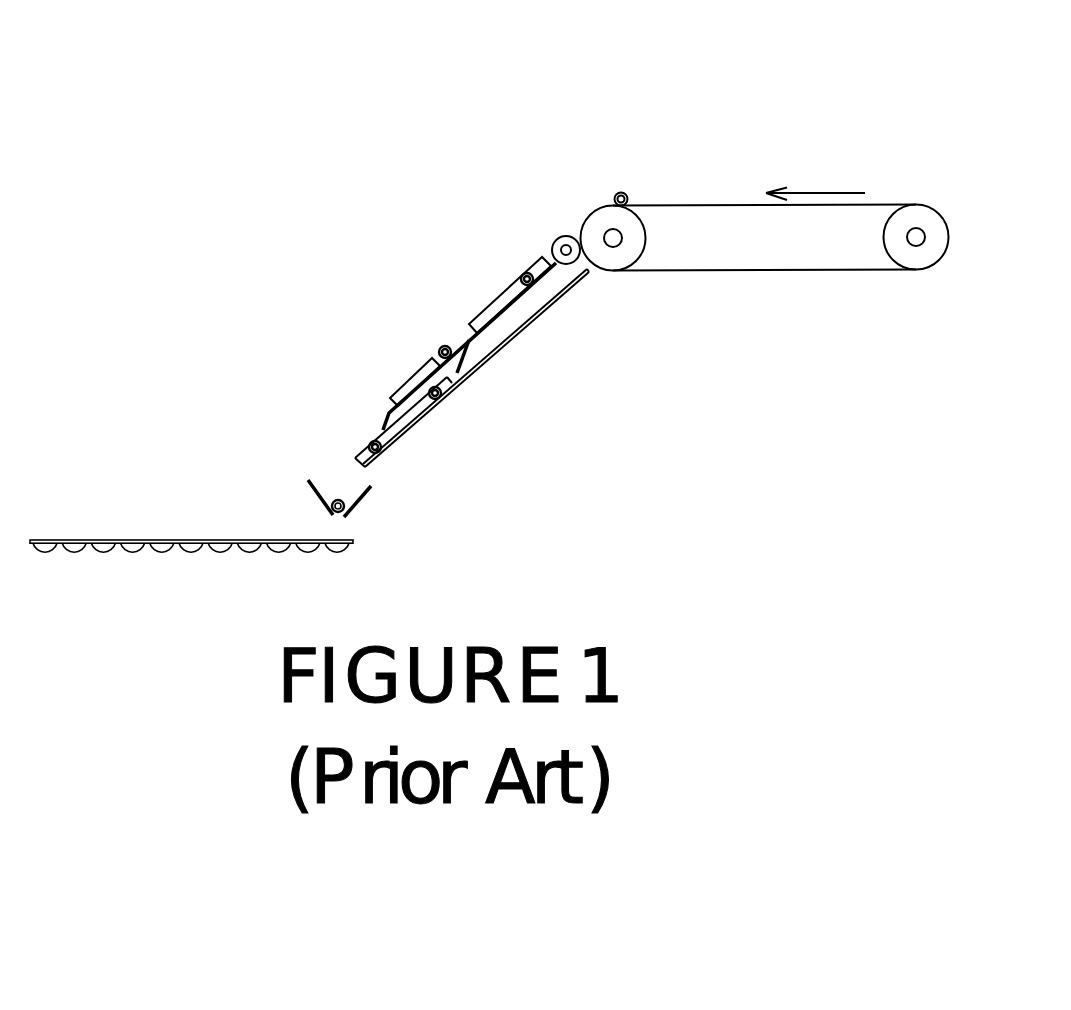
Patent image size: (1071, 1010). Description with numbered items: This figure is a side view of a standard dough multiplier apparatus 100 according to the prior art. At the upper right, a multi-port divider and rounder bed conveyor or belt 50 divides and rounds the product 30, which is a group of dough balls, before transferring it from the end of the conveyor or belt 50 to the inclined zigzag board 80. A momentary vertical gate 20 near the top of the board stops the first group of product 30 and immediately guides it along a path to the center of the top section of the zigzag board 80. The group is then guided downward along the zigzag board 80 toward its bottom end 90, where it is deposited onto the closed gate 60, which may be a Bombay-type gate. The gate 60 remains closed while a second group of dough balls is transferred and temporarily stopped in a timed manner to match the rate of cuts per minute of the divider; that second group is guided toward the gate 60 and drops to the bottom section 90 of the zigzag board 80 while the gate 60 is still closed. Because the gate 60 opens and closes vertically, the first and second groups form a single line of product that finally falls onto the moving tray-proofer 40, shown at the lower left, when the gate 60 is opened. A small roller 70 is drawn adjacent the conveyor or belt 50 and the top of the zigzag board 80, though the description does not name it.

The standard dough multiplier apparatus 100 is at (489, 284).
The vertical gate 20 is at (466, 366).
The product 30 is at (618, 193).
The moving tray-proofer 40 is at (85, 540).
The rounder bed conveyor or belt 50 is at (876, 205).
The gate 60 is at (310, 488).
The transfer roller 70 is at (553, 243).
The zigzag board 80 is at (400, 393).
The bottom end 90 is at (412, 415).